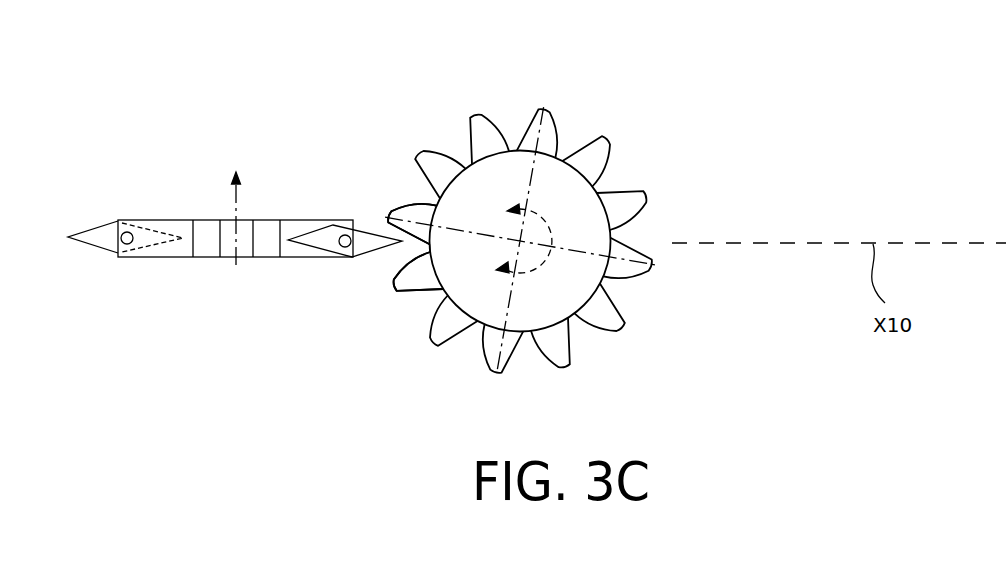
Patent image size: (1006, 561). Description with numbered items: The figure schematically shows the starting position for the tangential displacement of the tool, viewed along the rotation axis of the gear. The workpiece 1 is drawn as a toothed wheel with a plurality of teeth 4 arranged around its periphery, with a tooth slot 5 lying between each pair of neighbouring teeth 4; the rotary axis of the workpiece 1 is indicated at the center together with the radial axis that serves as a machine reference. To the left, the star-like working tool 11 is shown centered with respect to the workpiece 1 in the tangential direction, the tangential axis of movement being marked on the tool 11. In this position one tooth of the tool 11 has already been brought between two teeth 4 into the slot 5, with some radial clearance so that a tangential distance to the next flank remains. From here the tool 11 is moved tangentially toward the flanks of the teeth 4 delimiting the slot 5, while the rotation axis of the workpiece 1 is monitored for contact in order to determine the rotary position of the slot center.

The workpiece 1 is at (630, 110).
The teeth 4 is at (401, 200).
The tooth slot 5 is at (407, 252).
The working tool 11 is at (176, 289).